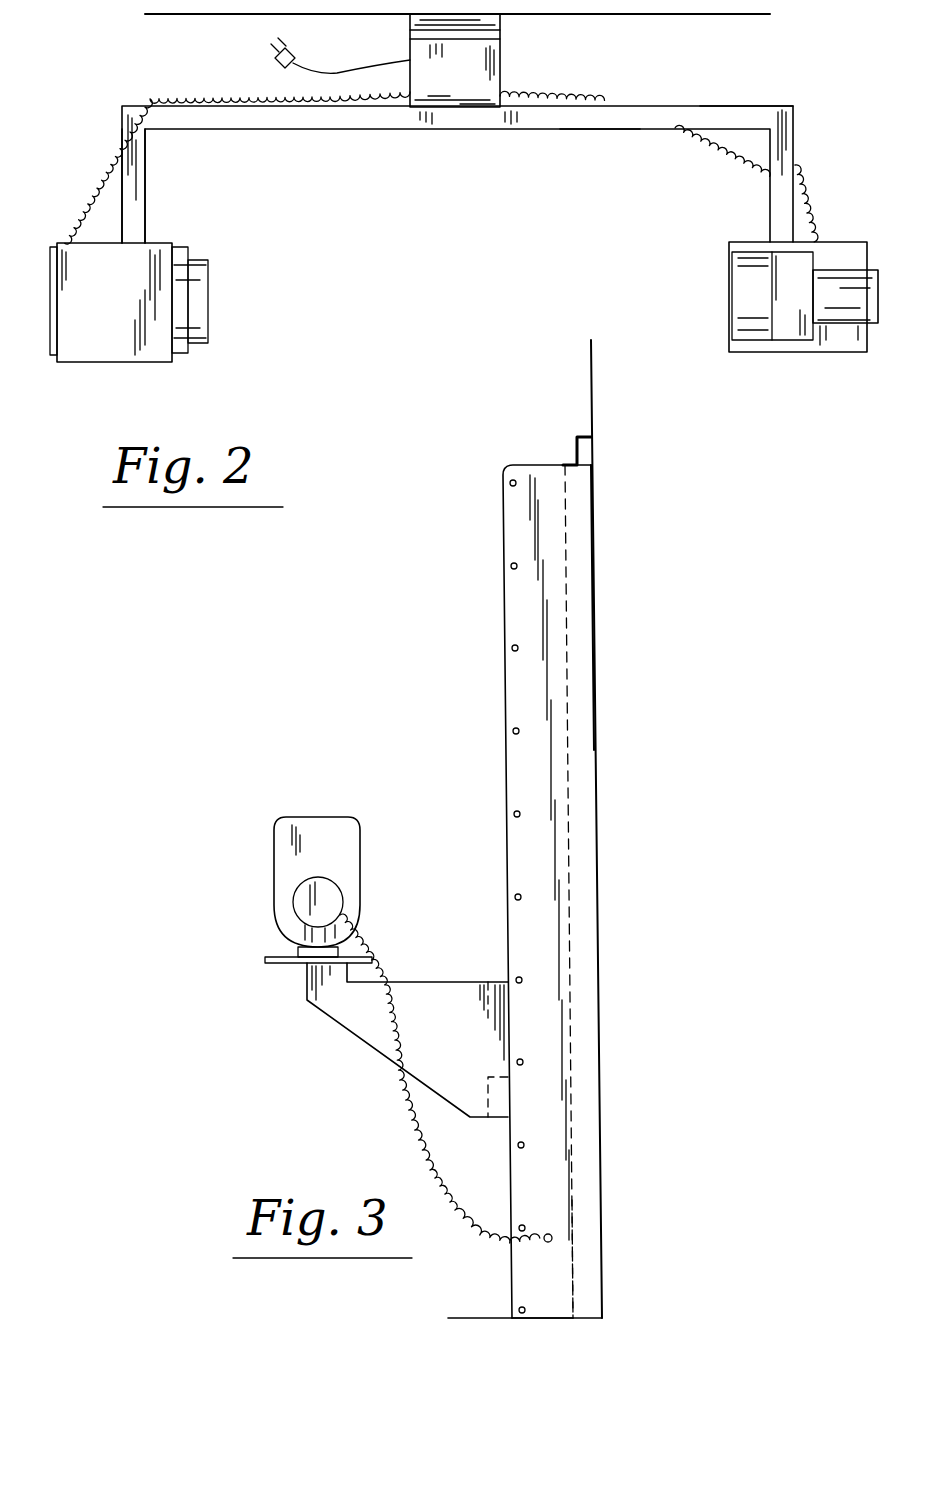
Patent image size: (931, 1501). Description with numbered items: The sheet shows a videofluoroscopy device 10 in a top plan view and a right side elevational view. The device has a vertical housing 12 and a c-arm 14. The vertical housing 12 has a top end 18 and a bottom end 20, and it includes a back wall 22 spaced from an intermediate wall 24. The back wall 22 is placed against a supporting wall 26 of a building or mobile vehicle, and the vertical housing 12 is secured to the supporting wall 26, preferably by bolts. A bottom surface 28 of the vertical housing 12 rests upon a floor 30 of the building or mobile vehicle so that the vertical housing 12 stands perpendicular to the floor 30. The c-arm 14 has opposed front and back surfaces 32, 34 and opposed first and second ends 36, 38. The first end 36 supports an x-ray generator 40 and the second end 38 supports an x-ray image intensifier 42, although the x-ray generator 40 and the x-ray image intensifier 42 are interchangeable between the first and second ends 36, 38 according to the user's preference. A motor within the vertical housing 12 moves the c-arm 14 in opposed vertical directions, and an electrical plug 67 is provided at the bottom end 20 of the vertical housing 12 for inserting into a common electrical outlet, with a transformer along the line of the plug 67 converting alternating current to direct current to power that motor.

In FIG. 2, the videofluoroscopy device 10 is at (360, 347).
In FIG. 3, the videofluoroscopy device 10 is at (328, 710).
In FIG. 2, the vertical housing 12 is at (478, 65).
In FIG. 3, the vertical housing 12 is at (515, 588).
In FIG. 2, the c-arm 14 is at (612, 103).
In FIG. 3, the c-arm 14 is at (398, 982).
In FIG. 2, the top end 18 is at (425, 28).
In FIG. 3, the top end 18 is at (577, 437).
In FIG. 3, the bottom end 20 is at (568, 1270).
In FIG. 3, the back wall 22 is at (593, 698).
In FIG. 3, the intermediate wall 24 is at (567, 641).
In FIG. 2, the supporting wall 26 is at (247, 14).
In FIG. 3, the supporting wall 26 is at (590, 383).
In FIG. 3, the bottom surface 28 is at (540, 1320).
In FIG. 3, the floor 30 is at (475, 1318).
In FIG. 2, the front surface 32 is at (598, 130).
In FIG. 2, the back surface 34 is at (702, 106).
In FIG. 2, the first end 36 is at (141, 184).
In FIG. 2, the second end 38 is at (772, 180).
In FIG. 3, the second end 38 is at (305, 990).
In FIG. 2, the x-ray generator 40 is at (155, 262).
In FIG. 2, the x-ray image intensifier 42 is at (793, 256).
In FIG. 3, the x-ray image intensifier 42 is at (290, 832).
In FIG. 2, the electrical plug 67 is at (337, 73).